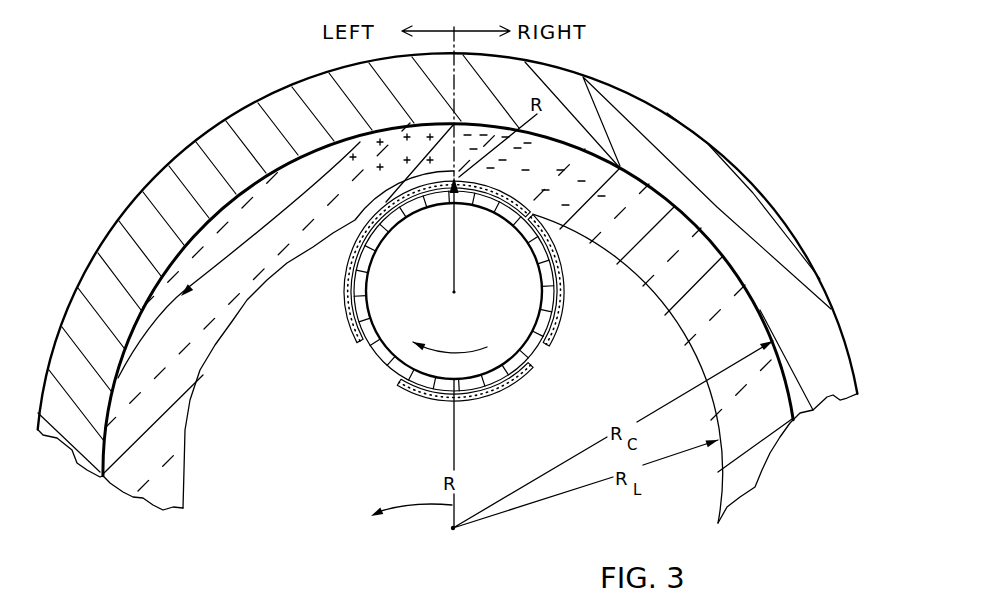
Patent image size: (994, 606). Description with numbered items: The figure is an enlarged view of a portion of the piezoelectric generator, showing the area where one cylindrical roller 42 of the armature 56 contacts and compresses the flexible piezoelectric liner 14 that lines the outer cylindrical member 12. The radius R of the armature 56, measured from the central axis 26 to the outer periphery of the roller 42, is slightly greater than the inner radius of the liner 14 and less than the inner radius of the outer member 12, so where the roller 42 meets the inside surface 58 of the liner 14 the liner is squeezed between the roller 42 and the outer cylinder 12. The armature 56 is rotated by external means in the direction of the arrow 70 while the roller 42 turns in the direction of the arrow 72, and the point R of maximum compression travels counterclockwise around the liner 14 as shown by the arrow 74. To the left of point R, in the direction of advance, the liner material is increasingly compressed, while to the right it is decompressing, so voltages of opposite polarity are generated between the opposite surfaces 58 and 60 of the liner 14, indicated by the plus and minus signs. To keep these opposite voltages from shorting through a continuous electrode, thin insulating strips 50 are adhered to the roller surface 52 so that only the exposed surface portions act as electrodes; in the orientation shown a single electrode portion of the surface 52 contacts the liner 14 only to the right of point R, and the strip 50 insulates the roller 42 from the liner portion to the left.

The outer cylindrical member 12 is at (641, 108).
The flexible piezoelectric material liner 14 is at (677, 228).
The central axis 26 is at (453, 528).
The cylindrical roller 42 is at (531, 348).
The insulating strips 50 is at (356, 329).
The roller surface 52 is at (387, 287).
The armature 56 is at (420, 398).
The inside surface of the liner 58 is at (185, 428).
The opposite surface of the liner 60 is at (143, 318).
The arrow indicating armature rotation direction 70 is at (400, 505).
The arrow indicating roller rotation direction 72 is at (458, 353).
The arrow indicating movement of point R 74 is at (217, 262).